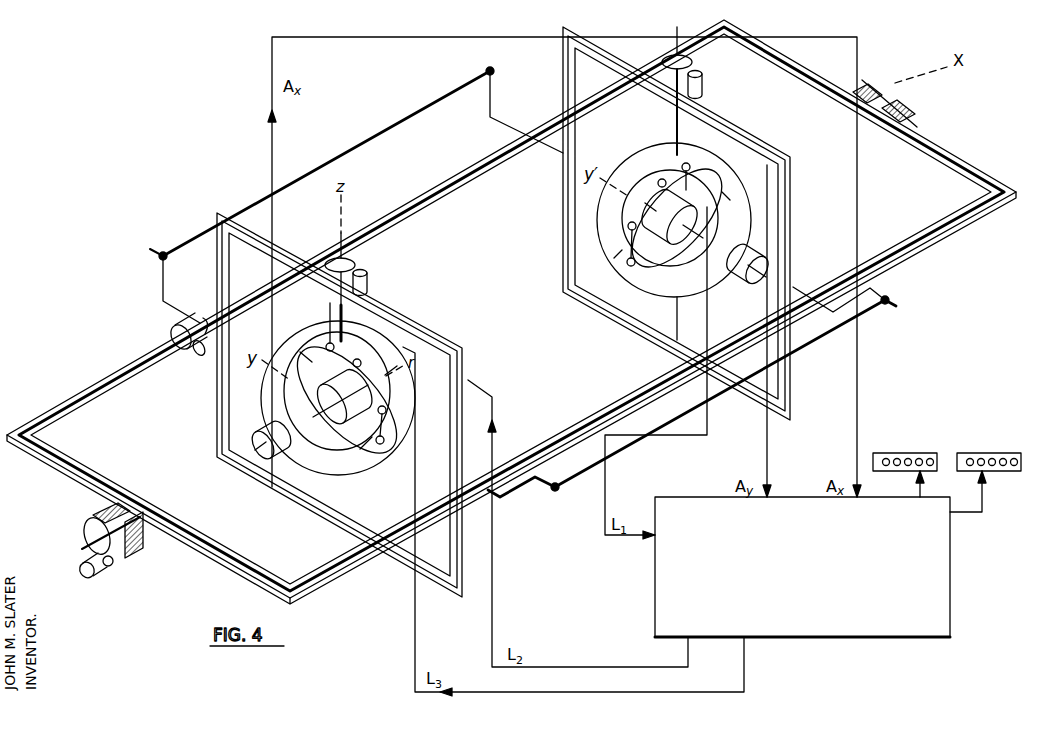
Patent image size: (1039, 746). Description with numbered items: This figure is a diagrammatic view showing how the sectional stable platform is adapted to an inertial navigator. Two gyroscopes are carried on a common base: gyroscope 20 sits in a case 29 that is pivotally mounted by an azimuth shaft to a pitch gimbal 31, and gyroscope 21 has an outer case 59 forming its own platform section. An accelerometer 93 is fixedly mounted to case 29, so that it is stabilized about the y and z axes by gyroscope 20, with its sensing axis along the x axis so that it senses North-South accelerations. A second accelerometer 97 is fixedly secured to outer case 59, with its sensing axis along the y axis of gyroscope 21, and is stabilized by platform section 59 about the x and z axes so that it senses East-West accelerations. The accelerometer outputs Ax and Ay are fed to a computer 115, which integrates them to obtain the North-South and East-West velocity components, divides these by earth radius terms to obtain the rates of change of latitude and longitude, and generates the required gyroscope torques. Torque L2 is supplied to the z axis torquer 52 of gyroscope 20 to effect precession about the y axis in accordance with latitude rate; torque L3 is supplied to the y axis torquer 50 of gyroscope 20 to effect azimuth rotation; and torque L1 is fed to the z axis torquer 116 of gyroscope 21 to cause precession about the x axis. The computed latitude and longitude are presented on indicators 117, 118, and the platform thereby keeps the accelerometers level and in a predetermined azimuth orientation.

The gyroscope 20 is at (352, 463).
The gyroscope 21 is at (624, 252).
The case 29 is at (398, 437).
The pitch gimbal 31 is at (396, 314).
The y axis torquer 50 is at (385, 408).
The z axis torquer 52 is at (326, 345).
The outer case 59 is at (730, 172).
The accelerometer 93 is at (262, 435).
The accelerometer 97 is at (745, 280).
The computer 115 is at (952, 573).
The z axis torquer 116 is at (687, 163).
The indicator 117 is at (921, 451).
The indicator 118 is at (1006, 451).